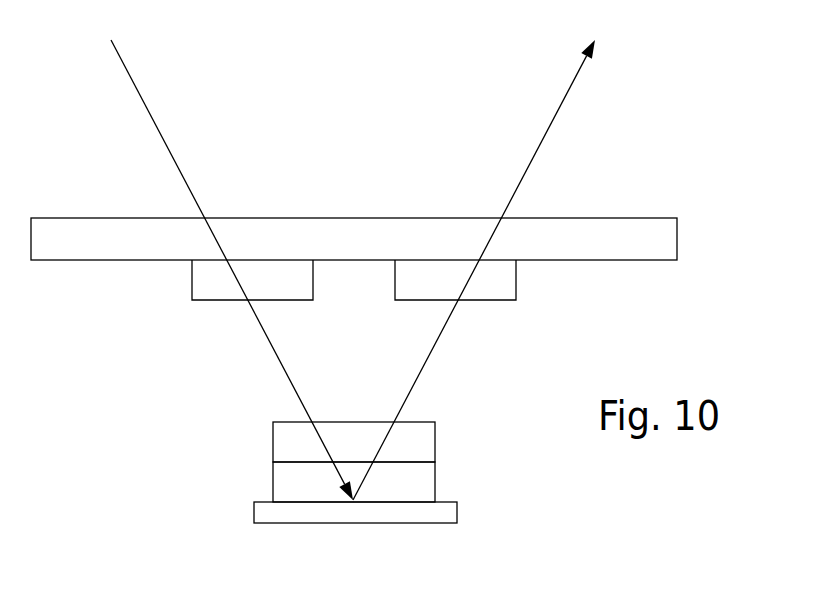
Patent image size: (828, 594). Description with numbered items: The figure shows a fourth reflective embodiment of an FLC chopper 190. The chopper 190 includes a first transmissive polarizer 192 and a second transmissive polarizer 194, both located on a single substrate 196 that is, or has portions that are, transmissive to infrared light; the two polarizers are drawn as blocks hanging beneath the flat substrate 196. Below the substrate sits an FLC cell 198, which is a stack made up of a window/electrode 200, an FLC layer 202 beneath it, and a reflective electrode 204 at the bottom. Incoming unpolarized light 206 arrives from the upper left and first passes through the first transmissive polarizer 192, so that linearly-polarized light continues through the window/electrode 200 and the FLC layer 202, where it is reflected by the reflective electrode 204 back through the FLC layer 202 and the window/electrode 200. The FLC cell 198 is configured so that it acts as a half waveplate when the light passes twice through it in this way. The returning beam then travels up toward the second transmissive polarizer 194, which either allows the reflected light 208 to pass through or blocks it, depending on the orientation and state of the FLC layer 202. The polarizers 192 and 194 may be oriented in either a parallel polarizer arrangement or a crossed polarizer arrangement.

The FLC chopper 190 is at (701, 175).
The first transmissive polarizer 192 is at (212, 290).
The second transmissive polarizer 194 is at (495, 280).
The substrate 196 is at (379, 236).
The FLC cell 198 is at (512, 464).
The window/electrode 200 is at (285, 430).
The FLC layer 202 is at (285, 472).
The reflective electrode 204 is at (285, 512).
The incoming unpolarized light 206 is at (150, 110).
The reflected light 208 is at (543, 135).